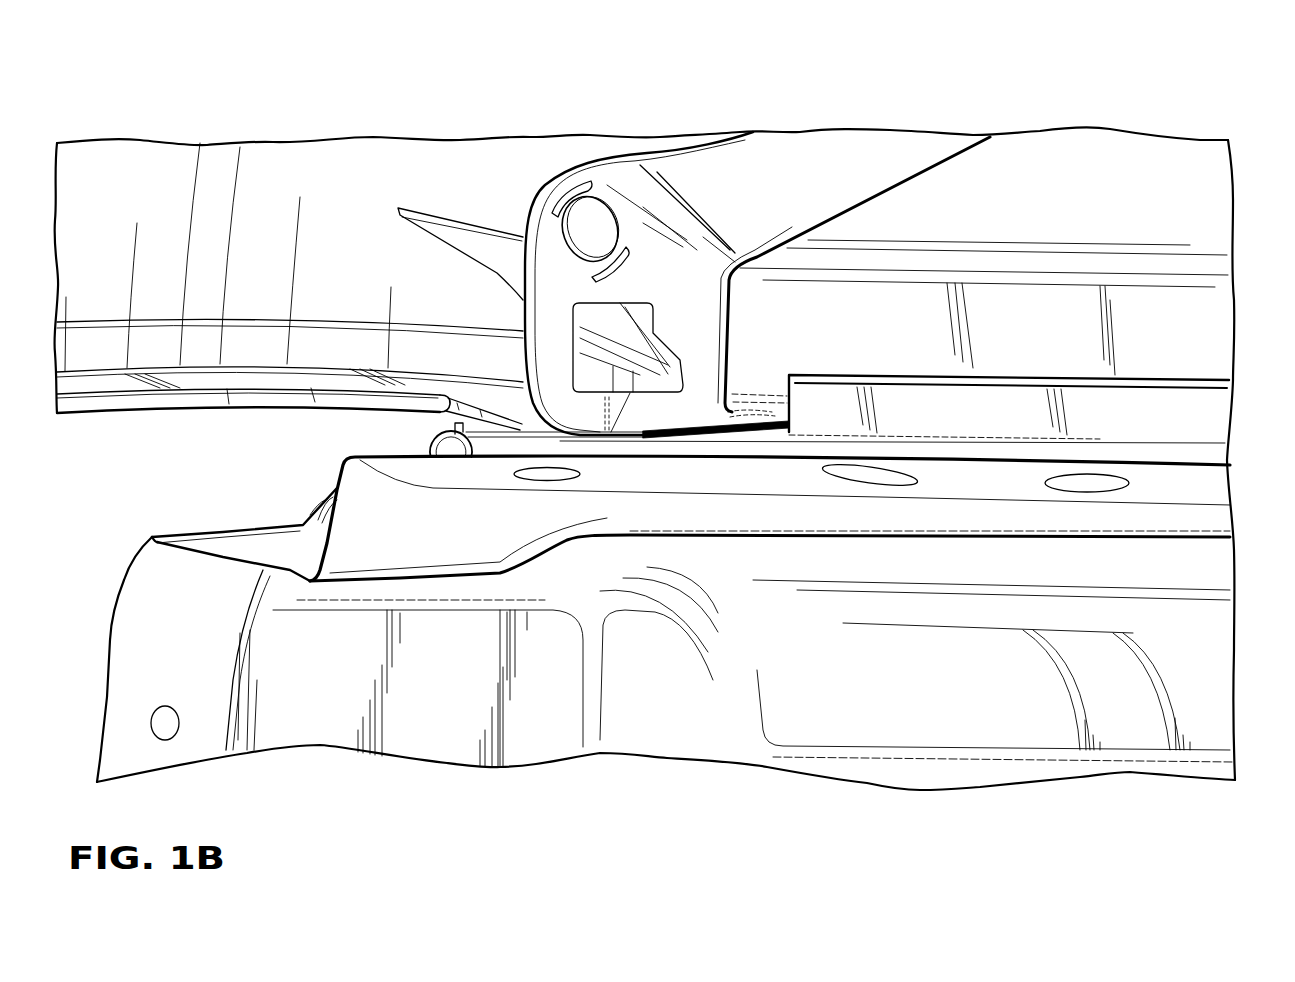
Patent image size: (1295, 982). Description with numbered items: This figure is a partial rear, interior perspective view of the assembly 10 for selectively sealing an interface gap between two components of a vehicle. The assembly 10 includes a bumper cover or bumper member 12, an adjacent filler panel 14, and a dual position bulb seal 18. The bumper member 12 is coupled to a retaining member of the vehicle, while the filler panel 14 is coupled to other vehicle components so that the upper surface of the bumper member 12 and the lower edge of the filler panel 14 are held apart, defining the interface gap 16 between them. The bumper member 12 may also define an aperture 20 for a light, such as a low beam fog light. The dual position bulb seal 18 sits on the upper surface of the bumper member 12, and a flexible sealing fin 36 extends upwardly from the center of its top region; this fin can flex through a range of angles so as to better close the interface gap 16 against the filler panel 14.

The assembly 10 is at (1078, 108).
The bumper member 12 is at (1213, 520).
The filler panel 14 is at (1220, 337).
The interface gap 16 is at (283, 518).
The dual position bulb seal 18 is at (429, 448).
The aperture 20 is at (693, 663).
The flexible sealing fin 36 is at (1195, 422).